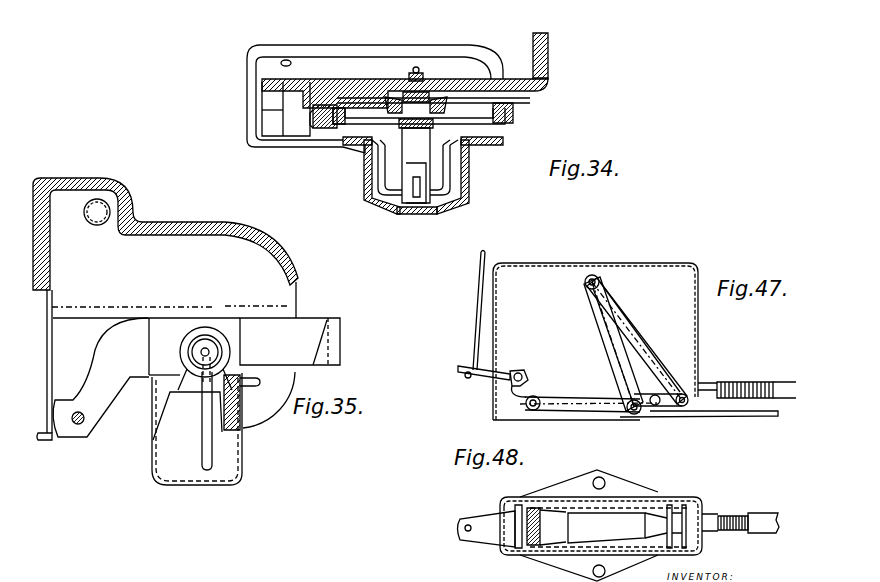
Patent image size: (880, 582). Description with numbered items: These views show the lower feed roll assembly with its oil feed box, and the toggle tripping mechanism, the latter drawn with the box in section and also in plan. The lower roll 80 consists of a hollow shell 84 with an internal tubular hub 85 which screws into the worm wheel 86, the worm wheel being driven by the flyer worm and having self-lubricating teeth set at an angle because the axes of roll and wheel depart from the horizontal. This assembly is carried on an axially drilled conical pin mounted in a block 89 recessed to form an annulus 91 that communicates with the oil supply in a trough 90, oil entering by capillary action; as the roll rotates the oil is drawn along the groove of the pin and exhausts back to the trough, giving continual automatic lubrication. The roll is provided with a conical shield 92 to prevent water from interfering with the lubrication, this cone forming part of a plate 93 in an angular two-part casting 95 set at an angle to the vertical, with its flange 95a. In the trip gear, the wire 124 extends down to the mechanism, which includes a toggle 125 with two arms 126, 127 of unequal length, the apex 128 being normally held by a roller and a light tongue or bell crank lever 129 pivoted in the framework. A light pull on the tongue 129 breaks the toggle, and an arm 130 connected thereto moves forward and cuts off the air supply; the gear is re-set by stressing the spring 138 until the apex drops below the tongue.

In FIG. 34, the lower roll 80 is at (468, 194).
In FIG. 34, the hollow shell 84 is at (468, 174).
In FIG. 34, the internal tubular hub 85 is at (417, 153).
In FIG. 34, the worm wheel 86 is at (323, 118).
In FIG. 34, the block 89 is at (483, 136).
In FIG. 35, the trough 90 is at (152, 455).
In FIG. 34, the annulus 91 is at (503, 101).
In FIG. 34, the conical shield 92 is at (380, 166).
In FIG. 34, the plate 93 is at (310, 141).
In FIG. 34, the angular two-part casting 95 is at (262, 73).
In FIG. 35, the angular two-part casting 95 is at (213, 292).
In FIG. 34, the cap flange 95a is at (547, 53).
In FIG. 35, the cap flange 95a is at (340, 347).
In FIG. 47, the wire 124 is at (477, 294).
In FIG. 47, the toggle 125 is at (657, 353).
In FIG. 48, the toggle 125 is at (606, 508).
In FIG. 47, the toggle arm 126 is at (607, 292).
In FIG. 48, the toggle arm 126 is at (655, 508).
In FIG. 47, the toggle arm 127 is at (603, 327).
In FIG. 48, the toggle arm 127 is at (690, 552).
In FIG. 47, the toggle apex 128 is at (593, 275).
In FIG. 48, the toggle apex 128 is at (535, 507).
In FIG. 47, the tongue 129 is at (514, 371).
In FIG. 48, the tongue 129 is at (490, 528).
In FIG. 47, the arm 130 is at (775, 410).
In FIG. 48, the arm 130 is at (760, 520).
In FIG. 47, the spring 138 is at (735, 382).
In FIG. 48, the spring 138 is at (728, 516).